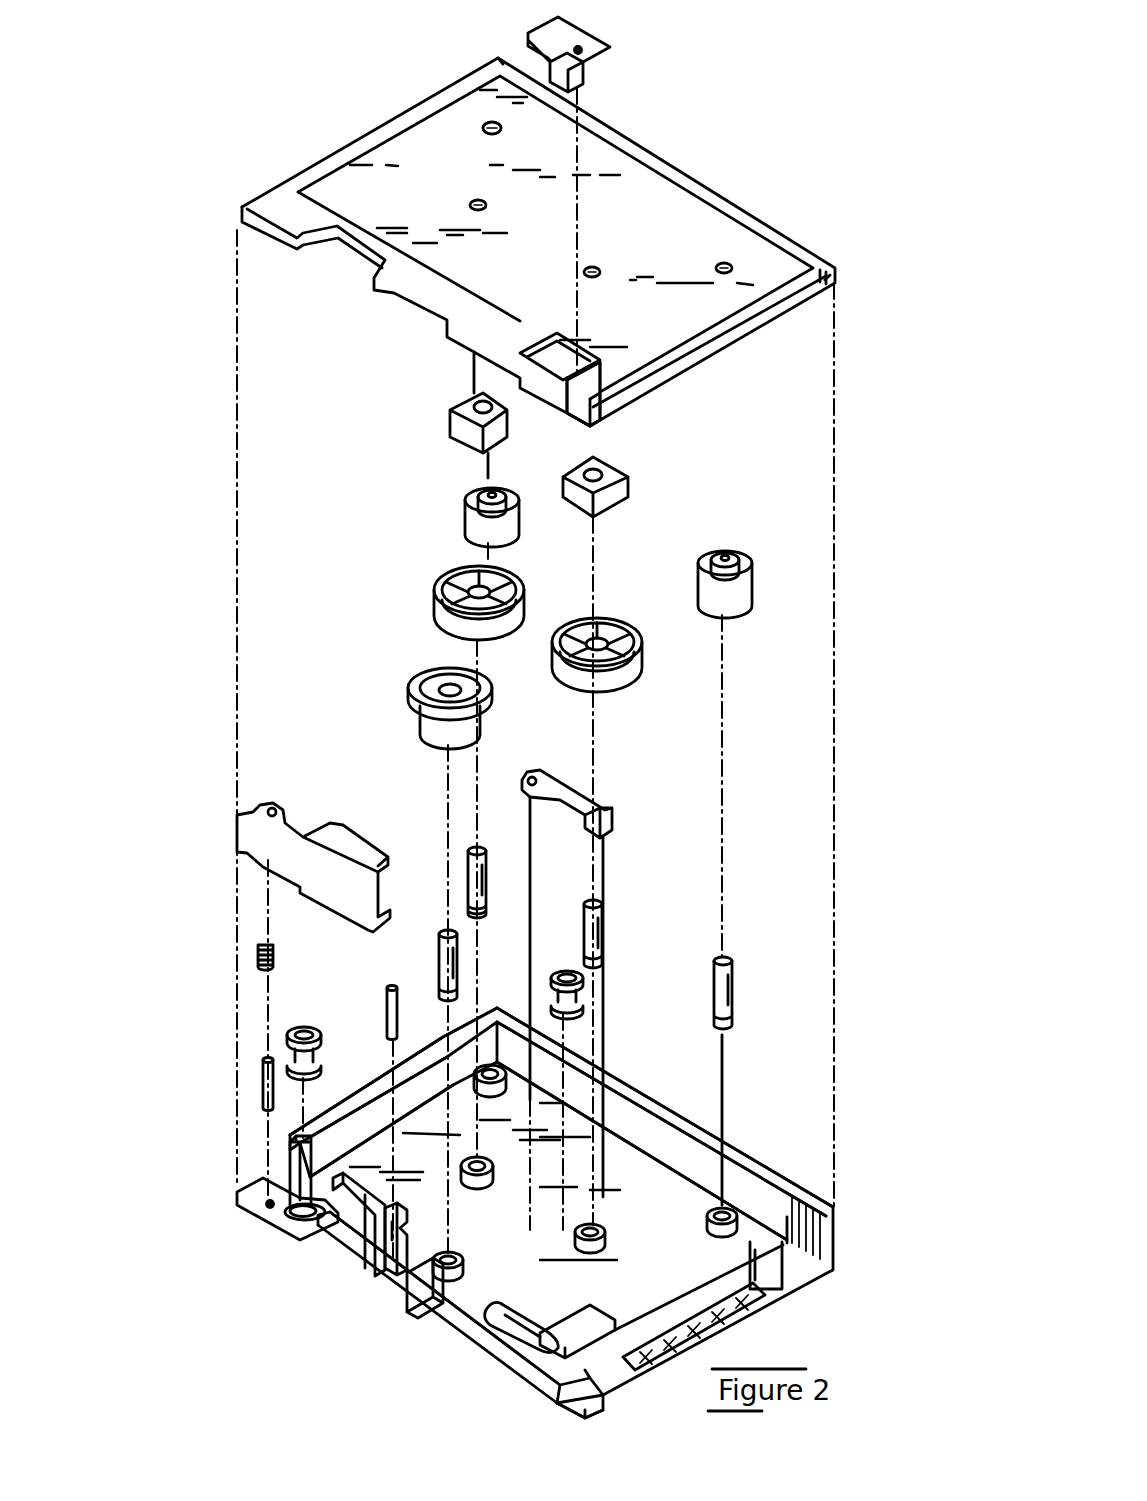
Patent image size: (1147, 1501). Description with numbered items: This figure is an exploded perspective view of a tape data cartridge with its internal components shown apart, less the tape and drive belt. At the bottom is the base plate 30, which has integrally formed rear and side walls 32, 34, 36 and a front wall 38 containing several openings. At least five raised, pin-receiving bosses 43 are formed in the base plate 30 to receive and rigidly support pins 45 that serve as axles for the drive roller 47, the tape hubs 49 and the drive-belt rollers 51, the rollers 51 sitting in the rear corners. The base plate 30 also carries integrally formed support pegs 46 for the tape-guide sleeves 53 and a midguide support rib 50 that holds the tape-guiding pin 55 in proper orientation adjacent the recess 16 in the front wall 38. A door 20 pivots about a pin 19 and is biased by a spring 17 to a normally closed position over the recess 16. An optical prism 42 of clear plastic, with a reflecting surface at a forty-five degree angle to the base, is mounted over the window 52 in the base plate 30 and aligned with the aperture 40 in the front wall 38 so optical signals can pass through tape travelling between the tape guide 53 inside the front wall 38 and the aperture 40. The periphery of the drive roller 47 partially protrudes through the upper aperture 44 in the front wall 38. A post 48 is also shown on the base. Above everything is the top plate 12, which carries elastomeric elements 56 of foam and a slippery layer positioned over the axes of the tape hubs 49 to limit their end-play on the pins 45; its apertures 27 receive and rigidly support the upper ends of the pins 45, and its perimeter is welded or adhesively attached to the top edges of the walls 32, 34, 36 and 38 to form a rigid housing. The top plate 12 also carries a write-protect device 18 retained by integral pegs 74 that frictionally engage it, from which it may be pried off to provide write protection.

The top plate 12 is at (654, 325).
The recess 16 is at (352, 1230).
The spring 17 is at (274, 963).
The write-protect device 18 is at (607, 62).
The pin 19 is at (262, 1068).
The door 20 is at (340, 822).
The apertures 27 is at (477, 197).
The base plate 30 is at (648, 1188).
The rear wall 32 is at (633, 1090).
The side wall 34 is at (370, 1096).
The side wall 36 is at (688, 1270).
The front wall 38 is at (424, 1388).
The aperture 40 is at (488, 1353).
The optical prism 42 is at (544, 782).
The pin-receiving bosses 43 is at (492, 1095).
The upper aperture 44 is at (413, 1297).
The pins 45 is at (583, 913).
The support pegs 46 is at (275, 1222).
The drive roller 47 is at (408, 690).
The post 48 is at (402, 1213).
The tape hubs 49 is at (555, 652).
The midguide support rib 50 is at (372, 1255).
The drive-belt rollers 51 is at (466, 520).
The window 52 is at (510, 1287).
The tape-guide sleeves 53 is at (553, 980).
The tape-guiding pin 55 is at (387, 1010).
The elastomeric elements 56 is at (580, 472).
The pegs 74 is at (603, 400).